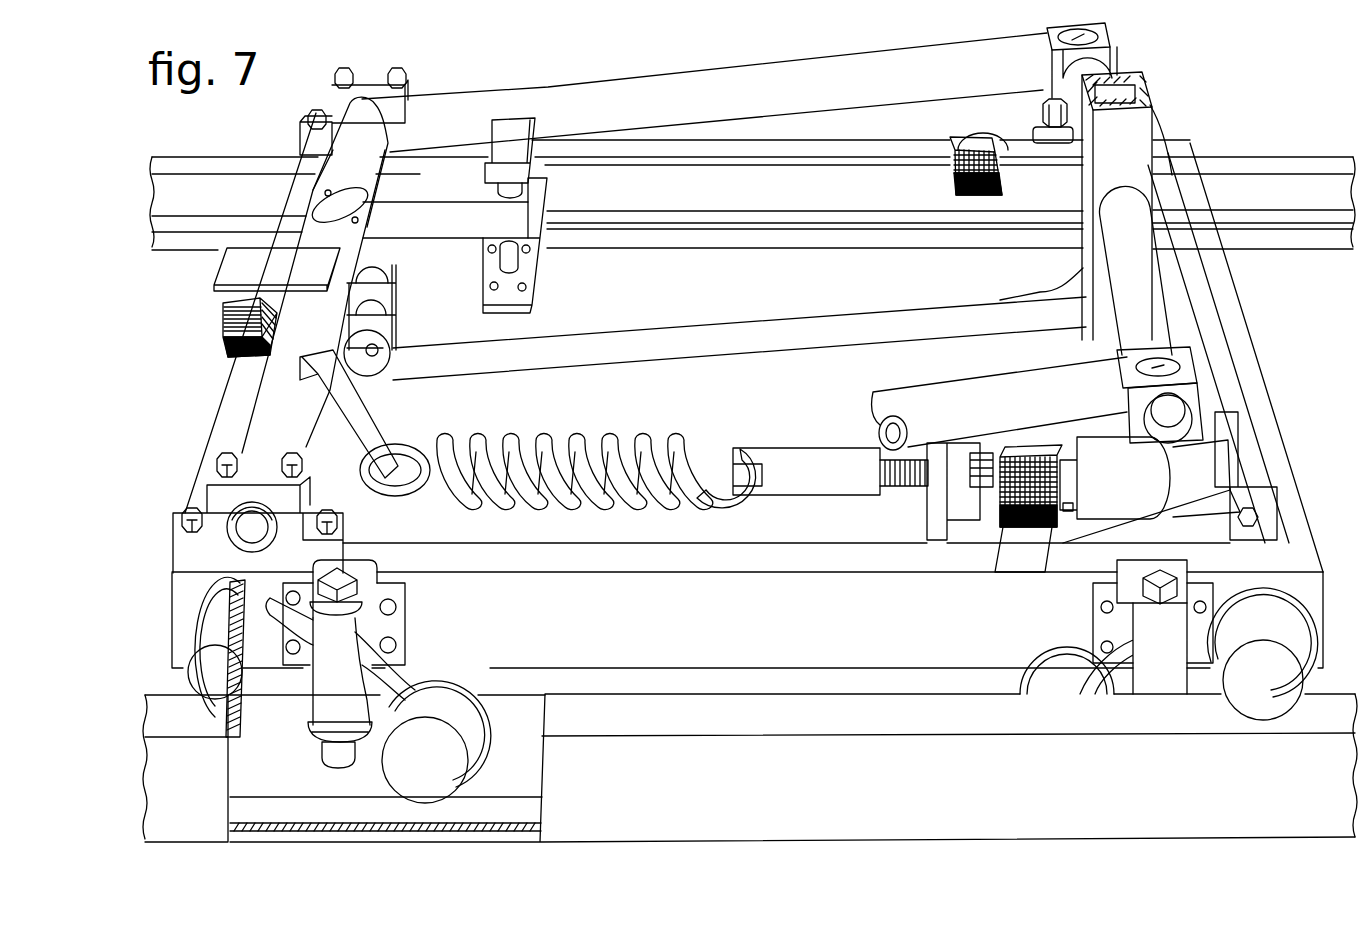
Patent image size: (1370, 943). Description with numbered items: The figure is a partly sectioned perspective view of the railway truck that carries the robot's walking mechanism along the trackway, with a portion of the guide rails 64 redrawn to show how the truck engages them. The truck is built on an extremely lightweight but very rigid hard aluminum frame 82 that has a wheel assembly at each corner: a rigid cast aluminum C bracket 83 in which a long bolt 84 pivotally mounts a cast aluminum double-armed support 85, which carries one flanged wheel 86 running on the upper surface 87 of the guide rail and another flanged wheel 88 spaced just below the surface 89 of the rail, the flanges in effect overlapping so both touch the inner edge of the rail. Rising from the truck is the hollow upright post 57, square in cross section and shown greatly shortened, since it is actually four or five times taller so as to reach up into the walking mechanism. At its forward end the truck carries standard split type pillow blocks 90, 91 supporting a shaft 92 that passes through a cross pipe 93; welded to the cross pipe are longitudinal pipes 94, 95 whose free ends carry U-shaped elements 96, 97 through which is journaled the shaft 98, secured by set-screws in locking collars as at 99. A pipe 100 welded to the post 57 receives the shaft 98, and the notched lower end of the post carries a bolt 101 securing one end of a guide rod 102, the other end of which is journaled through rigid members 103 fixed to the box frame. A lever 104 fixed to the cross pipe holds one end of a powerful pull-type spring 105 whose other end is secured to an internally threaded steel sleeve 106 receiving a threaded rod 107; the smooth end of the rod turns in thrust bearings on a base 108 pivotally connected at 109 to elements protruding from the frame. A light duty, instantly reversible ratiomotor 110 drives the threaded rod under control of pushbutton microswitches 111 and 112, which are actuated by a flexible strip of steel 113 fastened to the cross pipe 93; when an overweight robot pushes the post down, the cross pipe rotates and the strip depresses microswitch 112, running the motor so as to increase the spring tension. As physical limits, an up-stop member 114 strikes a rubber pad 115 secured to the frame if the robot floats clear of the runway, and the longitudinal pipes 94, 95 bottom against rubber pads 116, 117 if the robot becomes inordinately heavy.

The upright post 57 is at (1107, 159).
The guide rails 64 is at (1247, 216).
The frame 82 is at (727, 635).
The C bracket 83 is at (393, 624).
The long bolt 84 is at (341, 577).
The double-armed support 85 is at (321, 684).
The wheel 86 is at (194, 699).
The upper surface 87 is at (167, 713).
The wheel 88 is at (405, 789).
The surface 89 is at (234, 730).
The pillow block 90 is at (206, 569).
The pillow block 91 is at (366, 85).
The shaft 92 is at (237, 544).
The cross pipe 93 is at (292, 334).
The longitudinal pipe 94 is at (792, 100).
The longitudinal pipe 95 is at (939, 422).
The U-shaped element 96 is at (1047, 33).
The U-shaped element 97 is at (1143, 359).
The shaft 98 is at (1154, 435).
The locking collar 99 is at (1143, 371).
The pipe 100 is at (1121, 302).
The bolt 101 is at (1110, 313).
The guide rod 102 is at (687, 347).
The rigid members 103 is at (392, 303).
The lever 104 is at (363, 415).
The pull-type spring 105 is at (543, 447).
The steel sleeve 106 is at (782, 483).
The threaded rod 107 is at (895, 487).
The base 108 is at (1182, 496).
The pivotal connection 109 is at (1255, 518).
The ratiomotor 110 is at (1101, 494).
The microswitch 111 is at (492, 174).
The microswitch 112 is at (513, 279).
The flexible strip of steel 113 is at (422, 232).
The up-stop member 114 is at (254, 281).
The rubber pad 115 is at (222, 316).
The rubber pad 116 is at (950, 172).
The rubber pad 117 is at (1025, 513).